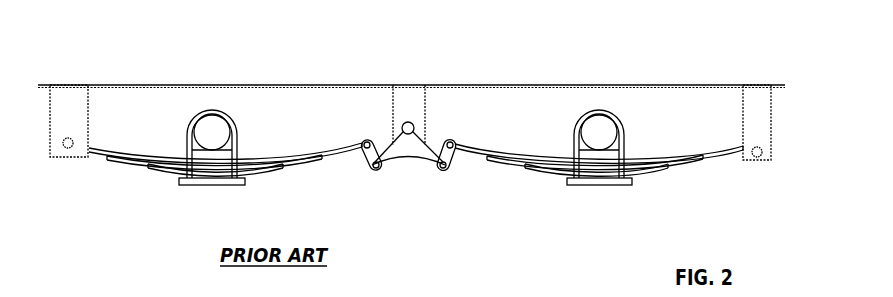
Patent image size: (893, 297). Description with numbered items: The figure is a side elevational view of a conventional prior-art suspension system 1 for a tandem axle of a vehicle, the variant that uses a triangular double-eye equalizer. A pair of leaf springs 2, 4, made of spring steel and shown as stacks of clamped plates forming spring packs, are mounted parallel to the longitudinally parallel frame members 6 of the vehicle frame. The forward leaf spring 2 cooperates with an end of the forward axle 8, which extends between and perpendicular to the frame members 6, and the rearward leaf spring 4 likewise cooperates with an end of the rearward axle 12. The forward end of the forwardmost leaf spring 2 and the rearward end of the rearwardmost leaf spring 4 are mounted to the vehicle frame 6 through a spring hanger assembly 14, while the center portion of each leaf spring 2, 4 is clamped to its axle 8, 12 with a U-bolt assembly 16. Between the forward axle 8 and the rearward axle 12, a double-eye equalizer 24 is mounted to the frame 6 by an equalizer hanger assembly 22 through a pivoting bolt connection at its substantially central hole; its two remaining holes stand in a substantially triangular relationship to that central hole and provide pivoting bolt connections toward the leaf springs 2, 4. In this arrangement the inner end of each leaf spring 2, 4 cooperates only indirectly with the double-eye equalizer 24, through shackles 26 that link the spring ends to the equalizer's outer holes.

The suspension system 1 is at (742, 59).
The forward leaf spring 2 is at (503, 167).
The rearward leaf spring 4 is at (110, 160).
The frame member 6 is at (583, 85).
The forward axle 8 is at (603, 130).
The rearward axle 12 is at (215, 128).
The spring hanger assembly 14 is at (57, 108).
The U-bolt assembly 16 is at (192, 150).
The equalizer hanger assembly 22 is at (430, 88).
The double-eye equalizer 24 is at (408, 160).
The shackle 26 is at (366, 162).